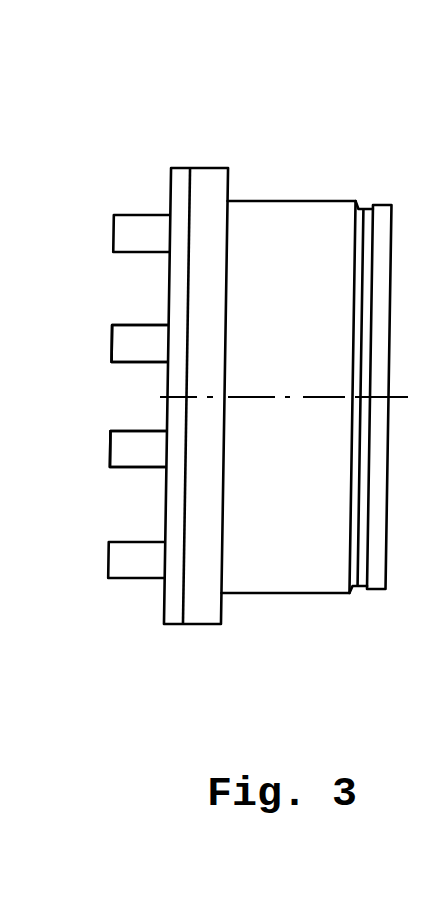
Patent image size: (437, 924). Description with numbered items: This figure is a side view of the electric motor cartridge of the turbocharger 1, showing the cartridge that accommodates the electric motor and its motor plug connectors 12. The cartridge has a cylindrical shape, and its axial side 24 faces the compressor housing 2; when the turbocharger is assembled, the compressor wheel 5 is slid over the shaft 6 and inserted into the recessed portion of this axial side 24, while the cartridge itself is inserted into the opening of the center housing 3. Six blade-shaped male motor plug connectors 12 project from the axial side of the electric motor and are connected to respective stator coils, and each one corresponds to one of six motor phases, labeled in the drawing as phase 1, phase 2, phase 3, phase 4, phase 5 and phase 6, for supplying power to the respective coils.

The motor plug connectors 12 is at (155, 380).
The axial side 24 is at (162, 297).
The turbocharger 1 is at (122, 232).
The compressor housing 2 is at (103, 342).
The center housing 3 is at (102, 449).
The contact pin # 4 is at (117, 556).
The compressor wheel 5 is at (102, 449).
The shaft 6 is at (103, 342).